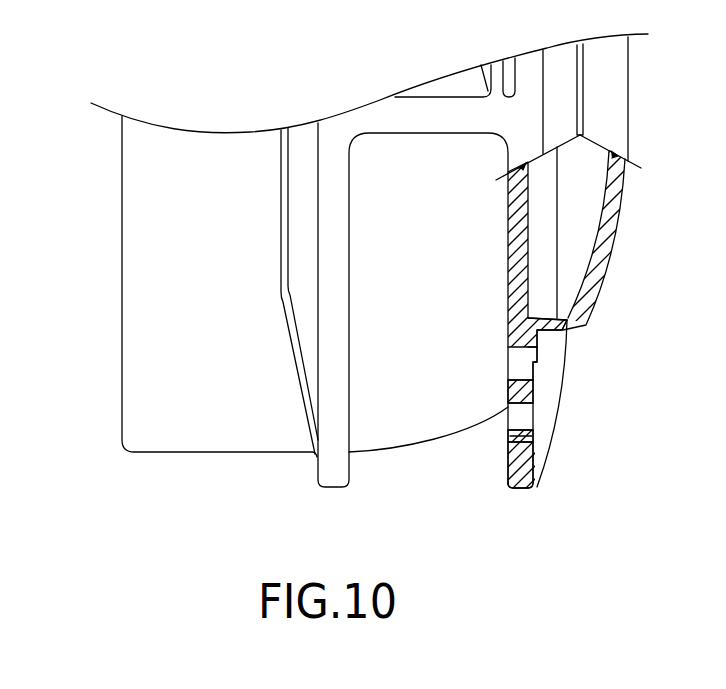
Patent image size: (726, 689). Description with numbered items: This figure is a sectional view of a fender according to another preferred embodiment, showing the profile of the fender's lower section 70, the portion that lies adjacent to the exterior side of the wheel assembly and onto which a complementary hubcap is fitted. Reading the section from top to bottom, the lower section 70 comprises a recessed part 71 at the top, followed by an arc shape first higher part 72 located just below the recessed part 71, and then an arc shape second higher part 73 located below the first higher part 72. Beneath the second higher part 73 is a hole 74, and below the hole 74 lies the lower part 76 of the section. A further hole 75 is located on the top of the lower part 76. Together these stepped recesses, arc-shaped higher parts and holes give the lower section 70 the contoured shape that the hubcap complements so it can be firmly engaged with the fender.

The lower section 70 is at (557, 437).
The recessed part 71 is at (585, 318).
The arc shape first higher part 72 is at (565, 327).
The arc shape second higher part 73 is at (547, 344).
The hole 74 is at (520, 363).
The hole 75 is at (510, 445).
The lower part 76 is at (537, 465).